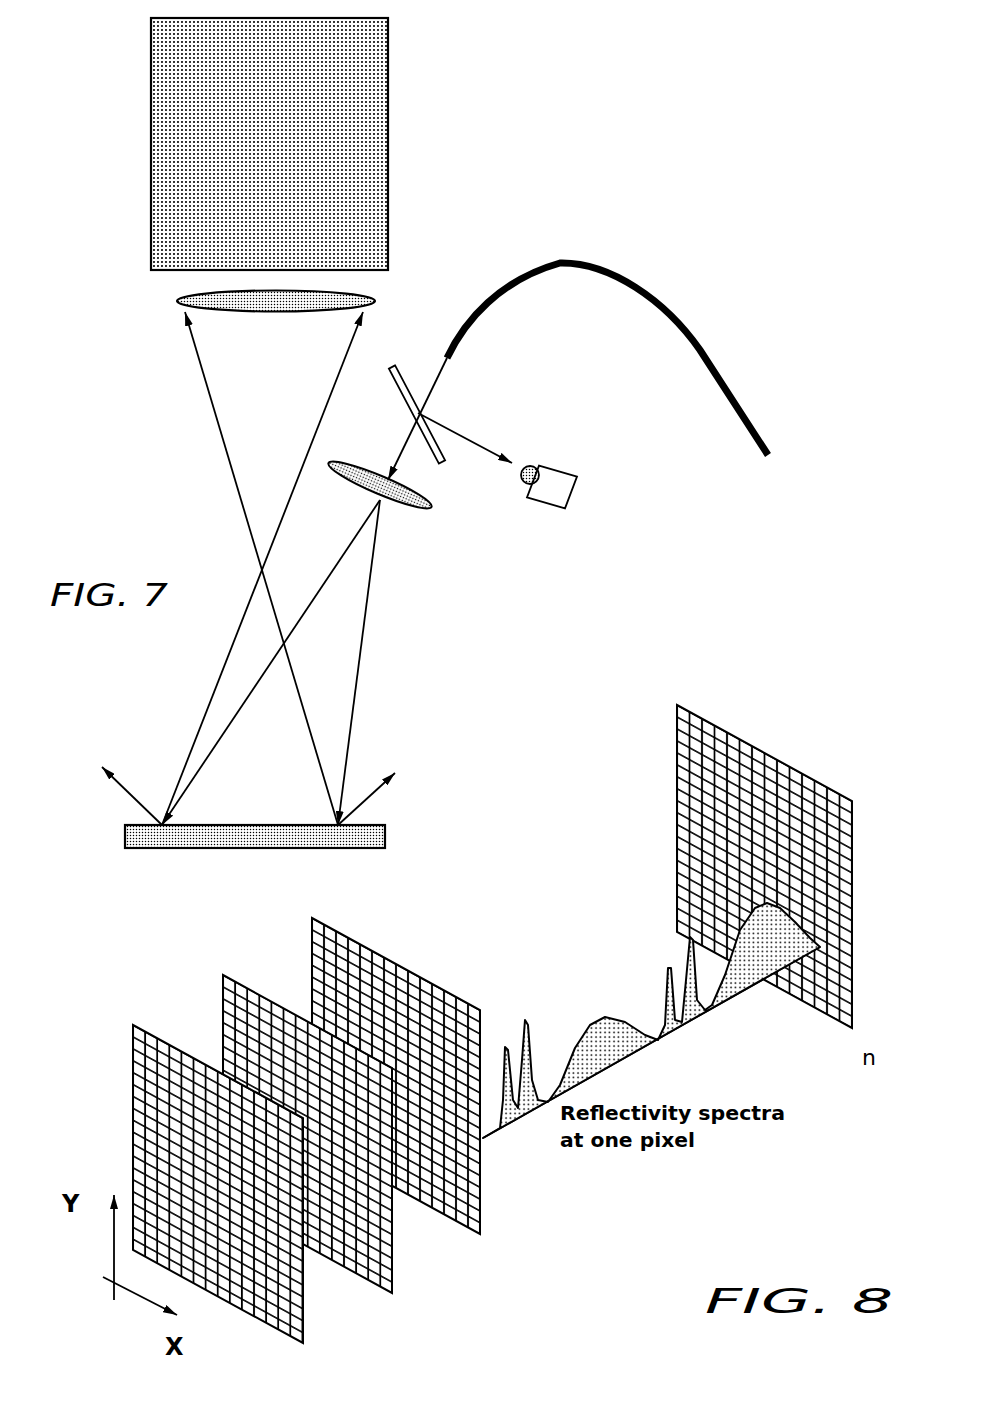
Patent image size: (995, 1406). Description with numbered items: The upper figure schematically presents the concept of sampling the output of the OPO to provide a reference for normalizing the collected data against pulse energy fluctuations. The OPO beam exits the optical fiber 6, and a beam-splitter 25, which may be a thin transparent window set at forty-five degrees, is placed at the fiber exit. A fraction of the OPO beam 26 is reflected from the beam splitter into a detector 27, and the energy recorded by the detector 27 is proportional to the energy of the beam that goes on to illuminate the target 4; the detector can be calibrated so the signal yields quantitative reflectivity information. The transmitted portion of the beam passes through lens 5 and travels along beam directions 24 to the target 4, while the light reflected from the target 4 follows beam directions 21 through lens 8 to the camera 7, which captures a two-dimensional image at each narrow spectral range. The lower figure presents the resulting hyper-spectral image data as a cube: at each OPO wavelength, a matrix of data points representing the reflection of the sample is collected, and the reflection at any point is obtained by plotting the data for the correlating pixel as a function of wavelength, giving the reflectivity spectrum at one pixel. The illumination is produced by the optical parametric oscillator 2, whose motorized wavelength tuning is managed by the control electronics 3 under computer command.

In FIG. 7, the camera 7 is at (388, 157).
In FIG. 7, the lens 8 is at (176, 303).
In FIG. 7, the beam direction 21 is at (317, 425).
In FIG. 7, the beam direction 24 is at (317, 597).
In FIG. 7, the target 4 is at (362, 848).
In FIG. 7, the optical fiber 6 is at (703, 347).
In FIG. 7, the beam-splitter 25 is at (405, 378).
In FIG. 7, the OPO beam 26 is at (470, 437).
In FIG. 7, the detector 27 is at (560, 478).
In FIG. 7, the lens 5 is at (418, 513).
In FIG. 8, the optical parametric oscillator 2 is at (322, 1165).
In FIG. 8, the control electronics 3 is at (408, 1109).